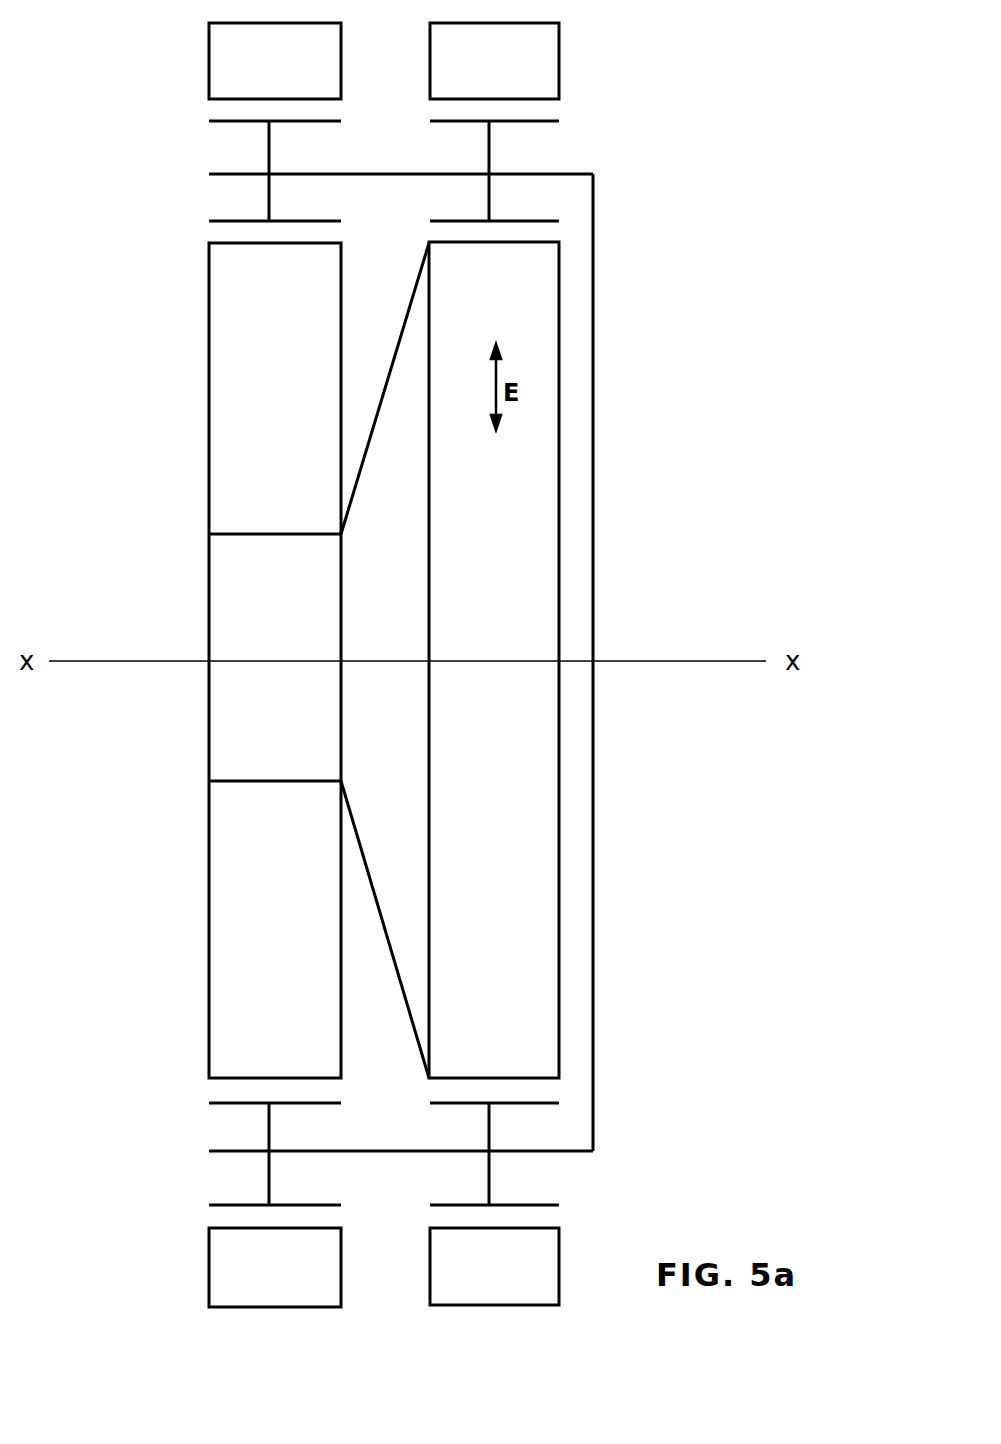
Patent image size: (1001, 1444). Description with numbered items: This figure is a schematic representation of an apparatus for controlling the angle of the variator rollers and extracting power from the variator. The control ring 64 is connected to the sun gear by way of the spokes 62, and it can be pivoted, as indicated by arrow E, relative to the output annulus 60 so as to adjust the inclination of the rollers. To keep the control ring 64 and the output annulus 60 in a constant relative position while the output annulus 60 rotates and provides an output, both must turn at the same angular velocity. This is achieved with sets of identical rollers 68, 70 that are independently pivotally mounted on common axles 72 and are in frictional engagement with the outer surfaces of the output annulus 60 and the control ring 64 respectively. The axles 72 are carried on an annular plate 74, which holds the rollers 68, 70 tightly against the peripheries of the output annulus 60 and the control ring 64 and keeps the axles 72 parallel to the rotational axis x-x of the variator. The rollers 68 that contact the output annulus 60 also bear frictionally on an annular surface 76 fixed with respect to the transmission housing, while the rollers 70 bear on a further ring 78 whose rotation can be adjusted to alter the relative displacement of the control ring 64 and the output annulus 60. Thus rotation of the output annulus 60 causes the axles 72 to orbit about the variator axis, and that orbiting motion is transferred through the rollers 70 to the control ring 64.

The output annulus 60 is at (298, 993).
The spokes 62 is at (364, 455).
The control ring 64 is at (515, 966).
The rollers 68 is at (212, 122).
The rollers 70 is at (552, 121).
The axles 72 is at (376, 172).
The annular plate 74 is at (594, 1088).
The annular surface 76 is at (225, 1228).
The further ring 78 is at (556, 98).